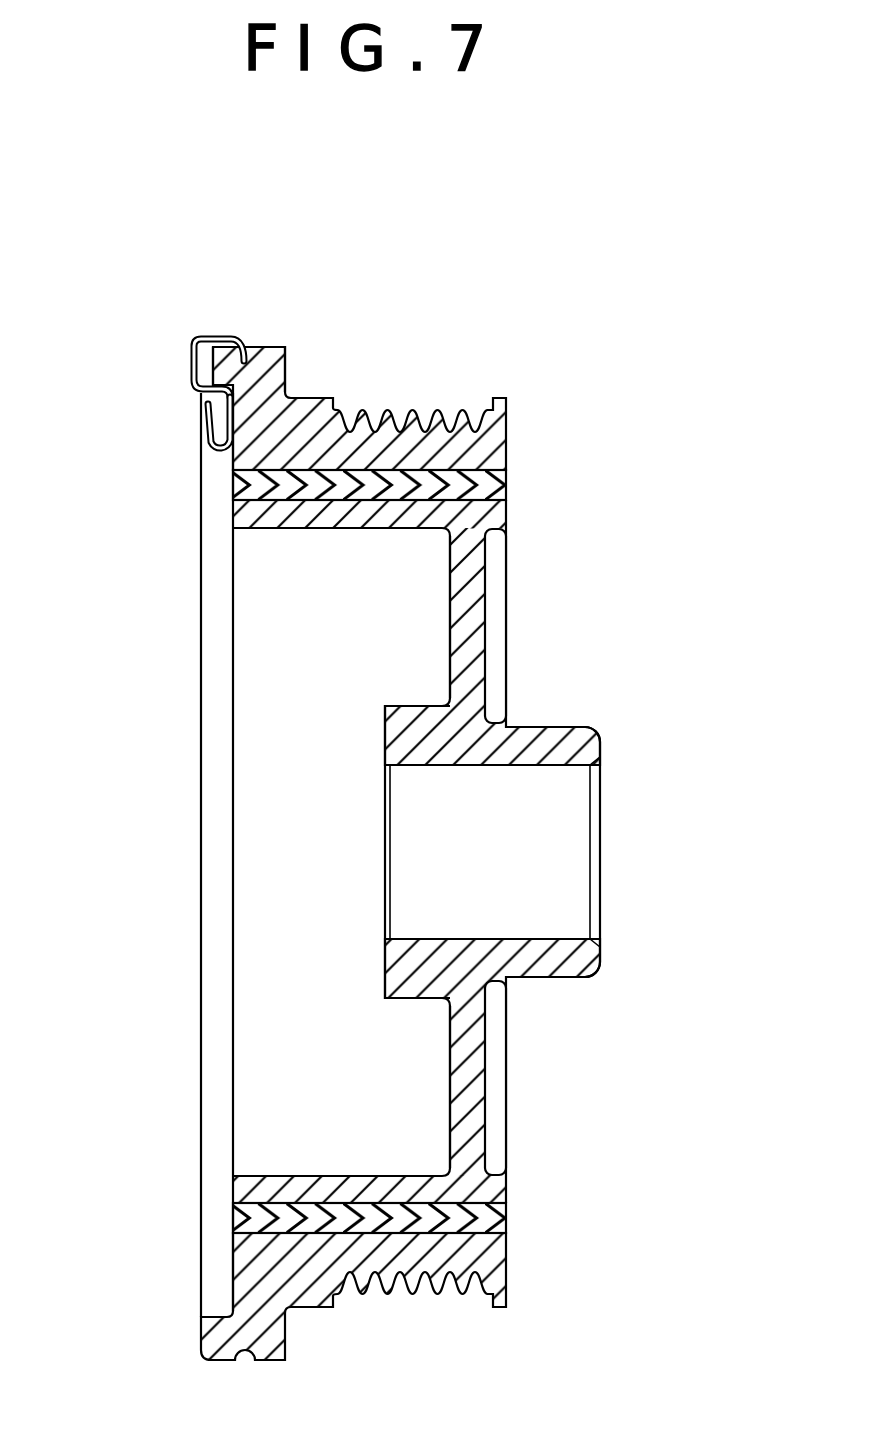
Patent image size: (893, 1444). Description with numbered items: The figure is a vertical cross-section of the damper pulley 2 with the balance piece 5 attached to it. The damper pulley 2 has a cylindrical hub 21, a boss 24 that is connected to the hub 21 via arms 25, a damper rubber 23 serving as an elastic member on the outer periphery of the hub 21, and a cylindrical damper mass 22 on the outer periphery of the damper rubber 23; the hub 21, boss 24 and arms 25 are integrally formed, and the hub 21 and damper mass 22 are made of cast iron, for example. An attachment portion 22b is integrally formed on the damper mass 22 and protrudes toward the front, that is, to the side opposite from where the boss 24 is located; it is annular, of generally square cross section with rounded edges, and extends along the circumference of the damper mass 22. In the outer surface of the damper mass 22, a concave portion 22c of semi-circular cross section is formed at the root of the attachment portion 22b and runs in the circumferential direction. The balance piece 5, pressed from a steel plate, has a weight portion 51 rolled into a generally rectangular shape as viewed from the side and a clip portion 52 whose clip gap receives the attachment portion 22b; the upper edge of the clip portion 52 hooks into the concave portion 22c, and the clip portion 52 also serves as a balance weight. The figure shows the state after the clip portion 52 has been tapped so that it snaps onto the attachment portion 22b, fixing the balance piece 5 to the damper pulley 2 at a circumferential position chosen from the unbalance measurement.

The damper pulley 2 is at (408, 791).
The hub 21 is at (295, 528).
The damper mass 22 is at (353, 791).
The attachment portion 22b is at (213, 353).
The concave portion 22c is at (252, 347).
The damper rubber 23 is at (473, 485).
The boss 24 is at (590, 742).
The arms 25 is at (472, 578).
The balance piece 5 is at (162, 394).
The weight portion 51 is at (208, 450).
The clip portion 52 is at (185, 363).